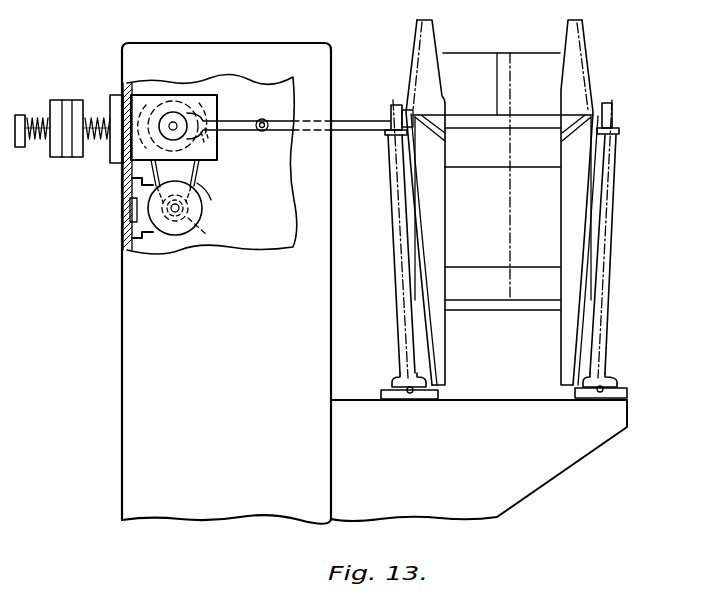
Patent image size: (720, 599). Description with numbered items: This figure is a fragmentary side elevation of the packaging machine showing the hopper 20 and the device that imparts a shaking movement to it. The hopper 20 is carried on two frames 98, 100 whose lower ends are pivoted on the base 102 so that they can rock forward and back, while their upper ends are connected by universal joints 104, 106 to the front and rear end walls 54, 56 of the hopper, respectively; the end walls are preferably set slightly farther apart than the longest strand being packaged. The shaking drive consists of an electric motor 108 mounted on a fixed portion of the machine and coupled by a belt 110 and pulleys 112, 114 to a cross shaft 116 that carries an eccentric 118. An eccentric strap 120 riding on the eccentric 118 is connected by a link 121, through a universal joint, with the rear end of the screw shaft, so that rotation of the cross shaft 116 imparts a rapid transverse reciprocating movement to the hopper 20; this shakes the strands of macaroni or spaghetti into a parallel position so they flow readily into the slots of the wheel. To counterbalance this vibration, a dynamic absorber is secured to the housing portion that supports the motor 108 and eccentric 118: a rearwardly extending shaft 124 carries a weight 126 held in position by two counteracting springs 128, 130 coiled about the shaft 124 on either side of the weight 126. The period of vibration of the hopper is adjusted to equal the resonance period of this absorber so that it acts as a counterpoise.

The hopper 20 is at (533, 46).
The front end wall 54 is at (581, 77).
The rear end wall 56 is at (422, 43).
The frame 98 is at (608, 296).
The frame 100 is at (396, 280).
The base 102 is at (617, 421).
The universal joint 104 is at (613, 109).
The universal joint 106 is at (400, 92).
The electric motor 108 is at (178, 229).
The belt 110 is at (209, 213).
The pulley 112 is at (211, 233).
The pulley 114 is at (164, 83).
The cross shaft 116 is at (174, 124).
The eccentric 118 is at (185, 118).
The eccentric strap 120 is at (204, 128).
The link 121 is at (282, 130).
The shaft 124 is at (40, 141).
The weight 126 is at (71, 104).
The spring 128 is at (28, 126).
The spring 130 is at (93, 114).